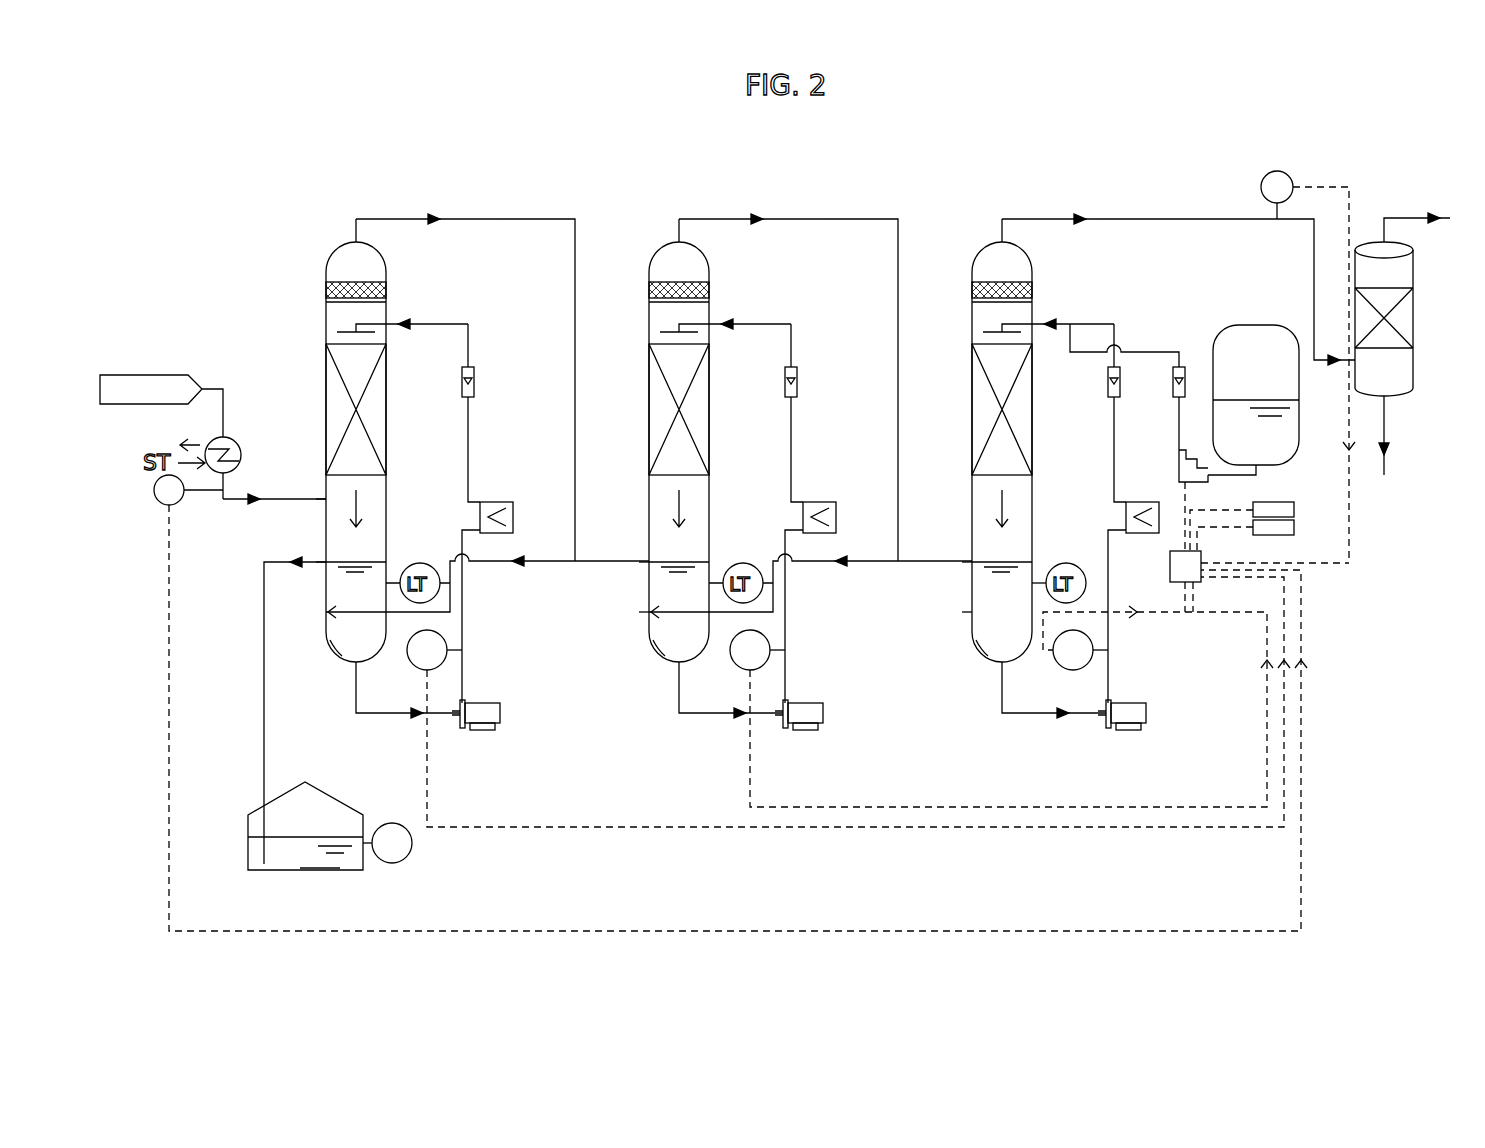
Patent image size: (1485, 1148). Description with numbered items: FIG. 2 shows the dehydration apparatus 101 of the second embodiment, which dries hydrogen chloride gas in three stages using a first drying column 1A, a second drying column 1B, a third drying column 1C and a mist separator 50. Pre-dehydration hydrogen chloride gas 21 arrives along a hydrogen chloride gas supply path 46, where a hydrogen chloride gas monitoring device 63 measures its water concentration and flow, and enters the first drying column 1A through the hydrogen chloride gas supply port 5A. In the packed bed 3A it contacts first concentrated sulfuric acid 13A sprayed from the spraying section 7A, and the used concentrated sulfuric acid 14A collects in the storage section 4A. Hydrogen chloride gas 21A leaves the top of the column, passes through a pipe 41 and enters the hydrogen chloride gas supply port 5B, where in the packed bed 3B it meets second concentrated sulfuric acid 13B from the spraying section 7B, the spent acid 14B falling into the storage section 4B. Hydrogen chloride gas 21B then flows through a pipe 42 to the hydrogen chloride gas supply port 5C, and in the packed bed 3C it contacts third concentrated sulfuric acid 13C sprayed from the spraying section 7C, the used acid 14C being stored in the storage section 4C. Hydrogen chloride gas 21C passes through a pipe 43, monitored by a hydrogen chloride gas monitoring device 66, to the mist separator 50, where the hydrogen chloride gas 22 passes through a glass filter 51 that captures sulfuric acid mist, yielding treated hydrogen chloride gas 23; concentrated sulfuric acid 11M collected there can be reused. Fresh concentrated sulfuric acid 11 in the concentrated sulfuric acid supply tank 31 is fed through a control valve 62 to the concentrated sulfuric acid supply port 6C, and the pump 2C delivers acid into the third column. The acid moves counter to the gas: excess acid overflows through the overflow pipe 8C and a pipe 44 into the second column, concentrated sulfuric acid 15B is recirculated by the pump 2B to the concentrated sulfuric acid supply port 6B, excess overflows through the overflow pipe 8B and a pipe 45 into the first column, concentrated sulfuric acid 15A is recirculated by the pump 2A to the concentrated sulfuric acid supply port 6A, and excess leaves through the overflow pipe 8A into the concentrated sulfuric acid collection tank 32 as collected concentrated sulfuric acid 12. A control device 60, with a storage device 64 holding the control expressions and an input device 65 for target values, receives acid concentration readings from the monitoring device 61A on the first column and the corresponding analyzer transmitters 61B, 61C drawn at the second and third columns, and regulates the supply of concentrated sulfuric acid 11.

The dehydration apparatus 101 is at (1318, 158).
The first drying column 1A is at (392, 274).
The second drying column 1B is at (715, 274).
The third drying column 1C is at (1038, 274).
The pump 2A is at (500, 708).
The pump 2B is at (823, 708).
The pump 2C is at (1146, 708).
The packed bed 3A is at (380, 421).
The packed bed 3B is at (703, 421).
The packed bed 3C is at (1026, 421).
The storage section 4A is at (330, 650).
The storage section 4B is at (653, 650).
The storage section 4C is at (976, 650).
The hydrogen chloride gas supply port 5A is at (324, 497).
The hydrogen chloride gas supply port 5B is at (647, 497).
The hydrogen chloride gas supply port 5C is at (970, 497).
The concentrated sulfuric acid supply port 6A is at (390, 320).
The concentrated sulfuric acid supply port 6B is at (713, 320).
The concentrated sulfuric acid supply port 6C is at (1036, 320).
The spraying section 7A is at (338, 331).
The spraying section 7B is at (661, 331).
The spraying section 7C is at (984, 331).
The overflow pipe 8A is at (324, 566).
The overflow pipe 8B is at (647, 566).
The overflow pipe 8C is at (970, 566).
The concentrated sulfuric acid 11 is at (1283, 457).
The concentrated sulfuric acid 11M is at (1392, 442).
The collected concentrated sulfuric acid 12 is at (316, 873).
The first concentrated sulfuric acid 13A is at (420, 324).
The second concentrated sulfuric acid 13B is at (743, 324).
The third concentrated sulfuric acid 13C is at (1066, 324).
The concentrated sulfuric acid 14A is at (370, 512).
The concentrated sulfuric acid 14B is at (693, 512).
The concentrated sulfuric acid 14C is at (1016, 512).
The concentrated sulfuric acid 15A is at (300, 562).
The concentrated sulfuric acid 15B is at (520, 565).
The pre-dehydration hydrogen chloride gas 21 is at (250, 502).
The hydrogen chloride gas 21A is at (428, 219).
The hydrogen chloride gas 21B is at (751, 219).
The hydrogen chloride gas 21C is at (1074, 219).
The hydrogen chloride gas 22 is at (1328, 370).
The treated hydrogen chloride gas 23 is at (1438, 218).
The concentrated sulfuric acid supply tank 31 is at (1258, 326).
The concentrated sulfuric acid collection tank 32 is at (247, 828).
The pipe 41 is at (510, 219).
The pipe 42 is at (835, 219).
The pipe 43 is at (1158, 219).
The pipe 44 is at (903, 561).
The pipe 45 is at (580, 561).
The hydrogen chloride gas supply path 46 is at (210, 392).
The mist separator 50 is at (1416, 275).
The glass filter 51 is at (1410, 324).
The control device 60 is at (1201, 560).
The monitoring device 61A is at (412, 672).
The second analyzer 61B is at (735, 672).
The third analyzer 61C is at (1058, 672).
The control valve 62 is at (1195, 484).
The hydrogen chloride gas monitoring device 63 is at (156, 500).
The storage device 64 is at (1294, 507).
The input device 65 is at (1294, 527).
The hydrogen chloride gas monitoring device 66 is at (1262, 182).